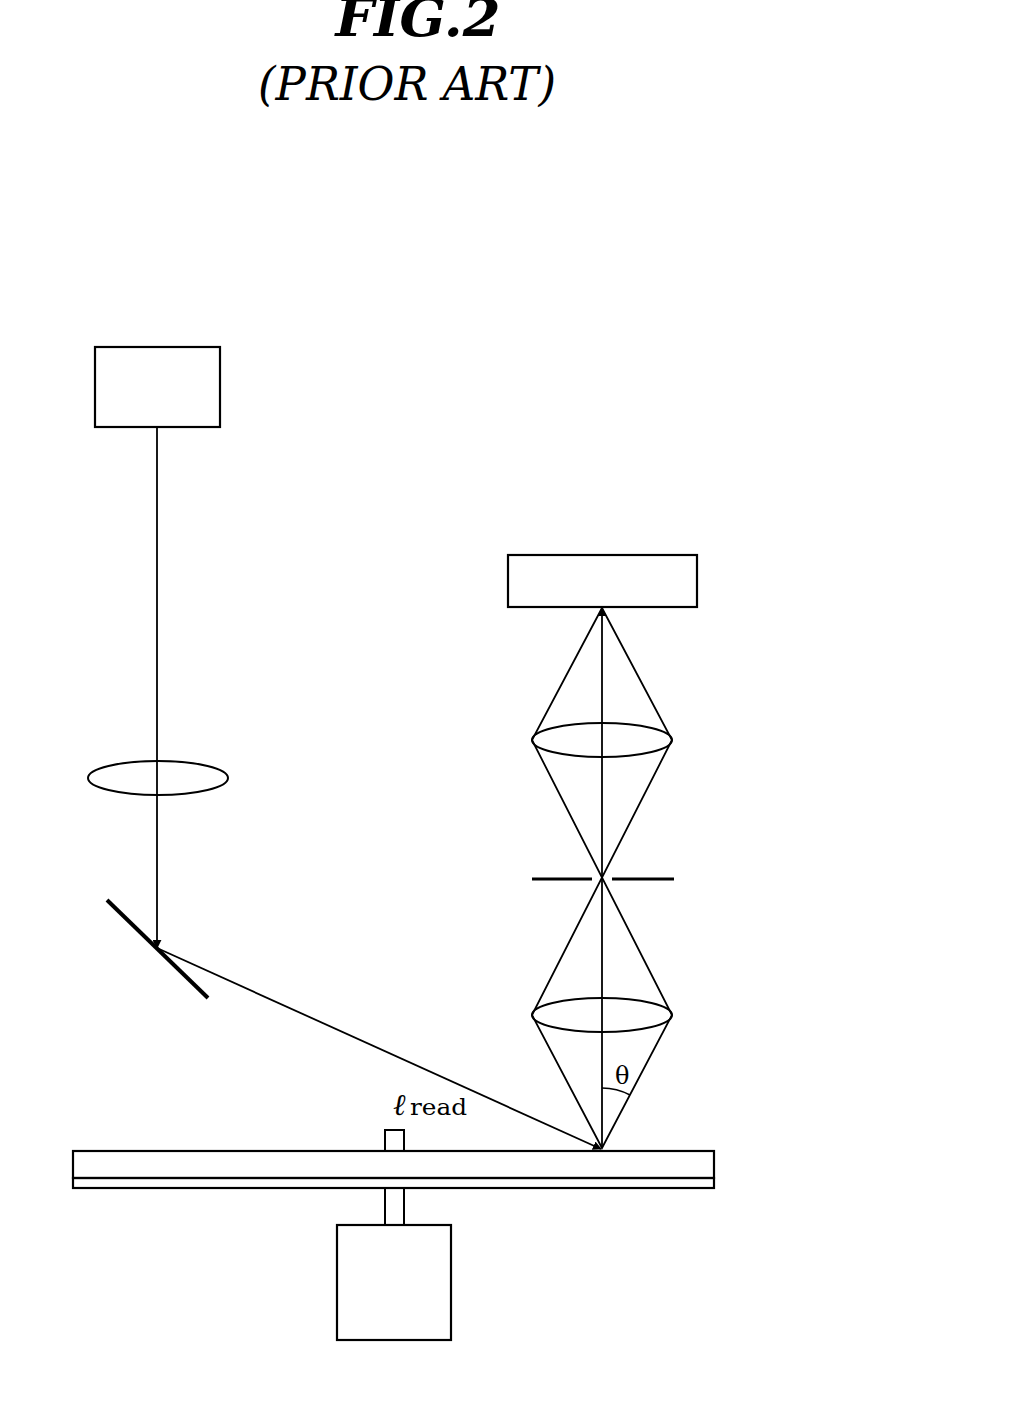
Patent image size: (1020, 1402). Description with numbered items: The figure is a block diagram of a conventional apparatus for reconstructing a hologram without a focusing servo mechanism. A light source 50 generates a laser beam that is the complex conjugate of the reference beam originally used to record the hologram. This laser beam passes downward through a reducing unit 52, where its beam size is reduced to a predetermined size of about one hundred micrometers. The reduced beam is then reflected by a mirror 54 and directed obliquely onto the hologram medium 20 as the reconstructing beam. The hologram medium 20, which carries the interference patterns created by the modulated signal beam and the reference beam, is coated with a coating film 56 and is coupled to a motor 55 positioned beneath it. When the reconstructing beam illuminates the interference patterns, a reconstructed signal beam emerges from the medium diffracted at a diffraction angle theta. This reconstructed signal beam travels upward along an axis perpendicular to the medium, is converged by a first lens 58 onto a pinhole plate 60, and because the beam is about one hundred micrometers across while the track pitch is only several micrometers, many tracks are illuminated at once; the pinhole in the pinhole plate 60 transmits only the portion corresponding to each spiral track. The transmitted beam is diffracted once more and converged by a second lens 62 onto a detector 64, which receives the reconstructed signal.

The hologram medium 20 is at (714, 1165).
The light source 50 is at (220, 386).
The reducing unit 52 is at (228, 775).
The mirror 54 is at (126, 918).
The motor 55 is at (337, 1285).
The coating film 56 is at (714, 1182).
The first lens 58 is at (673, 1012).
The pinhole plate 60 is at (662, 878).
The second lens 62 is at (673, 740).
The detector 64 is at (697, 578).